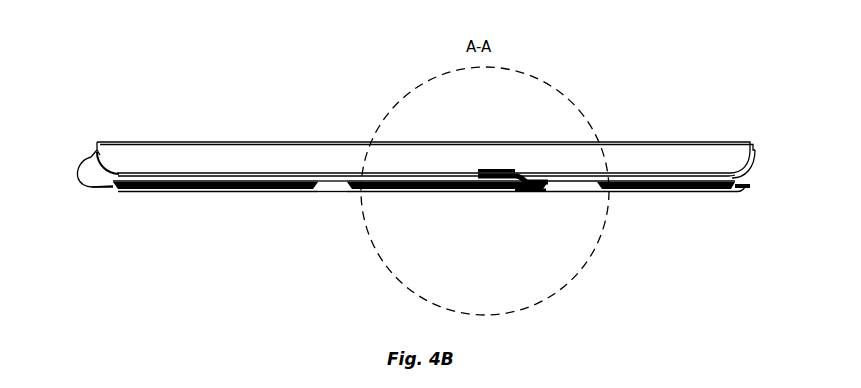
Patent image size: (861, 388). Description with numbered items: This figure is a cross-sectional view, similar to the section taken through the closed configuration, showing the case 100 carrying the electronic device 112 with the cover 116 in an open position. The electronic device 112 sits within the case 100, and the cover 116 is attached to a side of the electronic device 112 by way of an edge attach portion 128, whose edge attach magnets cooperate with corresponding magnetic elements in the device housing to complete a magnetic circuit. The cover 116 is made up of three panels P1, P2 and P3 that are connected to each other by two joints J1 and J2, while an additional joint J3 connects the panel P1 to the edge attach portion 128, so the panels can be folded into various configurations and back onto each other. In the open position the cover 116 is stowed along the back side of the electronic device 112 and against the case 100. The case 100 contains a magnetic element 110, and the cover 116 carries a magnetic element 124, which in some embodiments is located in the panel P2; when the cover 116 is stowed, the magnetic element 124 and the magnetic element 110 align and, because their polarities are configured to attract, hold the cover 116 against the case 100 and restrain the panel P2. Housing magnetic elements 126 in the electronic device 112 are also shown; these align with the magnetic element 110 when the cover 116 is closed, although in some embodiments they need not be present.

The case 100 is at (757, 151).
The magnetic element 110 is at (521, 185).
The electronic device 112 is at (330, 158).
The cover 116 is at (749, 186).
The magnetic element 124 is at (520, 191).
The housing magnetic element 126 is at (515, 170).
The edge attach portion 128 is at (92, 153).
The panel P1 is at (205, 203).
The panel P2 is at (443, 203).
The panel P3 is at (666, 203).
The joint J1 is at (86, 187).
The joint J2 is at (331, 203).
The joint J3 is at (584, 216).